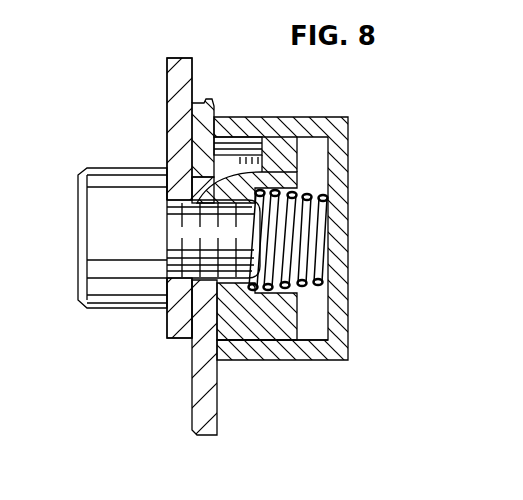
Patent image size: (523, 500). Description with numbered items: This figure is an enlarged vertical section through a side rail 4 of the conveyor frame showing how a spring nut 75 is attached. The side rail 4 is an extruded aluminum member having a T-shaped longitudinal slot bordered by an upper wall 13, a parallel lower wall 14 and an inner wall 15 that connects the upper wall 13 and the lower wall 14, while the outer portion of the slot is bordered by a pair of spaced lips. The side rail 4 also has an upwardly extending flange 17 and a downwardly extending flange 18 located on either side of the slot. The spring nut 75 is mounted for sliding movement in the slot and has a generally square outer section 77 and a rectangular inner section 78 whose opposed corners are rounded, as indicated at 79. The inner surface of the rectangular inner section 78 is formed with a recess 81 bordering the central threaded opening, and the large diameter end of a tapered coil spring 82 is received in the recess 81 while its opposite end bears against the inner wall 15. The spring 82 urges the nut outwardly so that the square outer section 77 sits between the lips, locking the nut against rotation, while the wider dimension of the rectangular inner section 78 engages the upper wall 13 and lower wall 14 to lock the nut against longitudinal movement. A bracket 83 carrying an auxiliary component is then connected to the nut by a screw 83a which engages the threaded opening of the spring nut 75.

The side rail 4 is at (349, 168).
The upper wall 13 is at (248, 122).
The lower wall 14 is at (307, 357).
The inner wall 15 is at (342, 332).
The upwardly extending flange 17 is at (206, 101).
The downwardly extending flange 18 is at (207, 421).
The spring nut 75 is at (256, 338).
The square outer section 77 is at (203, 290).
The rectangular inner section 78 is at (238, 330).
The rounded corners 79 is at (260, 140).
The recess 81 is at (277, 168).
The tapered coil spring 82 is at (322, 237).
The bracket 83 is at (167, 86).
The screw 83a is at (103, 237).